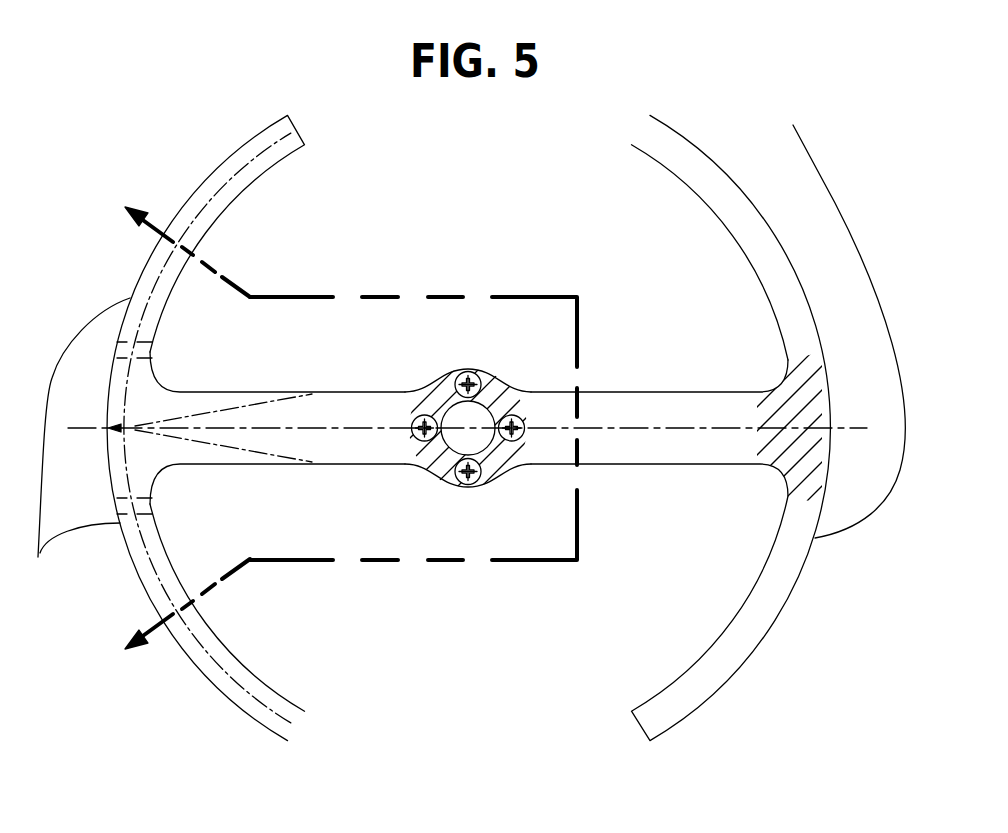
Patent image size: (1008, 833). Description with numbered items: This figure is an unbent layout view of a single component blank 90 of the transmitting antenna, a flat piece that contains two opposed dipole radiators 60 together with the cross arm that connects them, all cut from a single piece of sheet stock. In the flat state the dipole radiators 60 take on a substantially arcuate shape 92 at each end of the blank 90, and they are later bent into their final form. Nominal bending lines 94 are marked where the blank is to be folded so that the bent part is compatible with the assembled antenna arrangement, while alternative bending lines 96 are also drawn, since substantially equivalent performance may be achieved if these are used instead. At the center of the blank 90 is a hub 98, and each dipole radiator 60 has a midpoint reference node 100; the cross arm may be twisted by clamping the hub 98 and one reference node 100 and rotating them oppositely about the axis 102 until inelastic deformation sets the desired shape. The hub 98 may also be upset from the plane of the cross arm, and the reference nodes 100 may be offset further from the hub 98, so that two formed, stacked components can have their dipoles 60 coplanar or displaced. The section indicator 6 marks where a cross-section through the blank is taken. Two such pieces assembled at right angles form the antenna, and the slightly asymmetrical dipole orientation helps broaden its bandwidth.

The blank 90 is at (152, 112).
The arcuate shape 92 is at (260, 157).
The nominal bending lines 94 is at (150, 350).
The alternative bending lines 96 is at (212, 410).
The hub 98 is at (437, 392).
The midpoint reference nodes 100 is at (802, 402).
The axis 102 is at (710, 430).
The dipole radiators 60 is at (748, 203).
The section line 6 is at (174, 429).